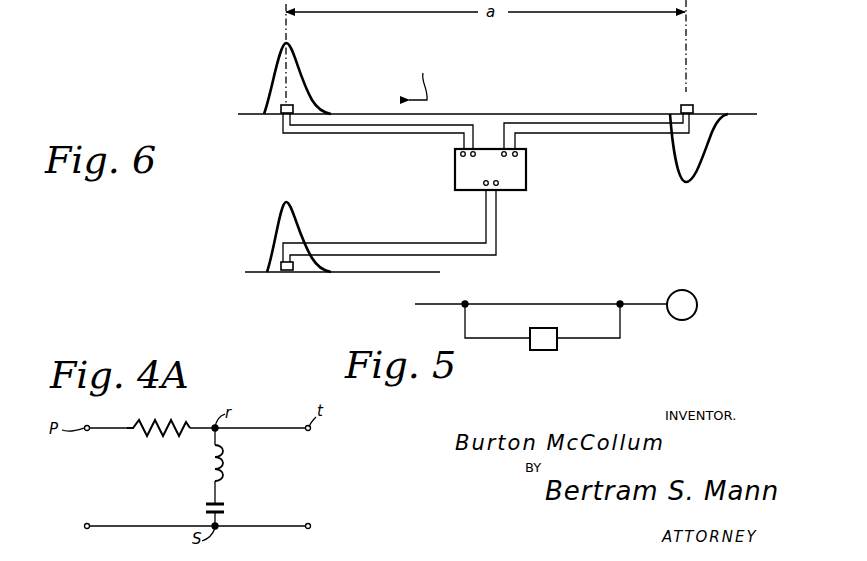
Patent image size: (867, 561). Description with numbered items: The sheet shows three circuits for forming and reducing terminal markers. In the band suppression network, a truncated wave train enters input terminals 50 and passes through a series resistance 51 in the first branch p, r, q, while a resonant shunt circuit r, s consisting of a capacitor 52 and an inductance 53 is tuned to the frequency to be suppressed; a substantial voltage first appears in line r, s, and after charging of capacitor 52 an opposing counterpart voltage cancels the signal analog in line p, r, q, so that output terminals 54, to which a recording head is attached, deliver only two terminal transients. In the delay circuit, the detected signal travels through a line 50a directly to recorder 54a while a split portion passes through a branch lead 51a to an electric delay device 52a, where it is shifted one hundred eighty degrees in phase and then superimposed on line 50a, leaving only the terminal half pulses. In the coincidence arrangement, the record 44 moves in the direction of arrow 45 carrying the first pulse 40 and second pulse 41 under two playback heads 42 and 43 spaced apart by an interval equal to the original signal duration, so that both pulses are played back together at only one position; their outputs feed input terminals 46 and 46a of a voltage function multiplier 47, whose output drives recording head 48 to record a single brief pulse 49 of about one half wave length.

In FIG. 6, the terminal pulse 40 is at (300, 70).
In FIG. 6, the terminal pulse 41 is at (699, 161).
In FIG. 6, the playback head 42 is at (283, 106).
In FIG. 6, the playback head 43 is at (662, 56).
In FIG. 6, the record 44 is at (575, 114).
In FIG. 6, the arrow 45 is at (418, 77).
In FIG. 6, the input terminal 46 is at (465, 158).
In FIG. 6, the input terminal 46a is at (517, 160).
In FIG. 6, the voltage function multiplier 47 is at (497, 180).
In FIG. 6, the recording head 48 is at (238, 288).
In FIG. 6, the single brief pulse 49 is at (296, 215).
In FIG. 5, the line 50a is at (515, 304).
In FIG. 5, the branch lead 51a is at (465, 323).
In FIG. 5, the electric delay device 52a is at (540, 352).
In FIG. 5, the recorder 54a is at (697, 312).
In FIG. 4A, the input terminals 50 is at (82, 434).
In FIG. 4A, the series resistance 51 is at (156, 438).
In FIG. 4A, the capacitor 52 is at (227, 509).
In FIG. 4A, the inductance 53 is at (229, 466).
In FIG. 4A, the output terminals 54 is at (313, 434).